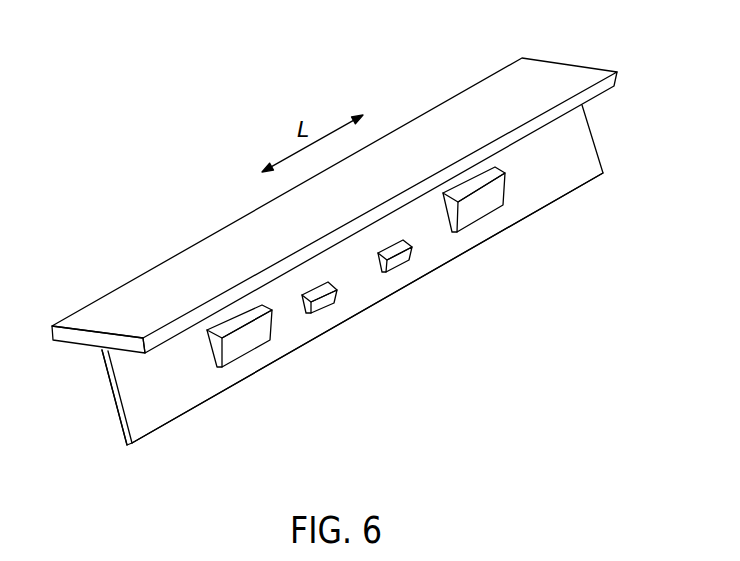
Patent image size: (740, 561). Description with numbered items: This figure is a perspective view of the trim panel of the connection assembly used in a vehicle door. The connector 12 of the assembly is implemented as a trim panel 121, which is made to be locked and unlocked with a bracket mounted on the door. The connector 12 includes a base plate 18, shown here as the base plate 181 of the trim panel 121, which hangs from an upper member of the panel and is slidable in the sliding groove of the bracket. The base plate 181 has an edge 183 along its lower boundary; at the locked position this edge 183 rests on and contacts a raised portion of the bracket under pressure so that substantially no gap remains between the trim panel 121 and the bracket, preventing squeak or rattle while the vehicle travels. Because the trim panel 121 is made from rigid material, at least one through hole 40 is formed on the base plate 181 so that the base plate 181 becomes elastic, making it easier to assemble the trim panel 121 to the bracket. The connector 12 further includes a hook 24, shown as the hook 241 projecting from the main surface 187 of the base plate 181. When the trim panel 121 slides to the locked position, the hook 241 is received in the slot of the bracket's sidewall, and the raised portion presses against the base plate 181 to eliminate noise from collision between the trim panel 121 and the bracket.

The connector 12 is at (532, 35).
The trim panel 121 is at (334, 198).
The base plate 18 is at (170, 404).
The base plate 181 is at (355, 274).
The edge of the base plate 183 is at (160, 430).
The main surface of the base plate 187 is at (133, 376).
The hook 24 is at (475, 210).
The hook 241 is at (474, 199).
The through hole 40 is at (312, 300).